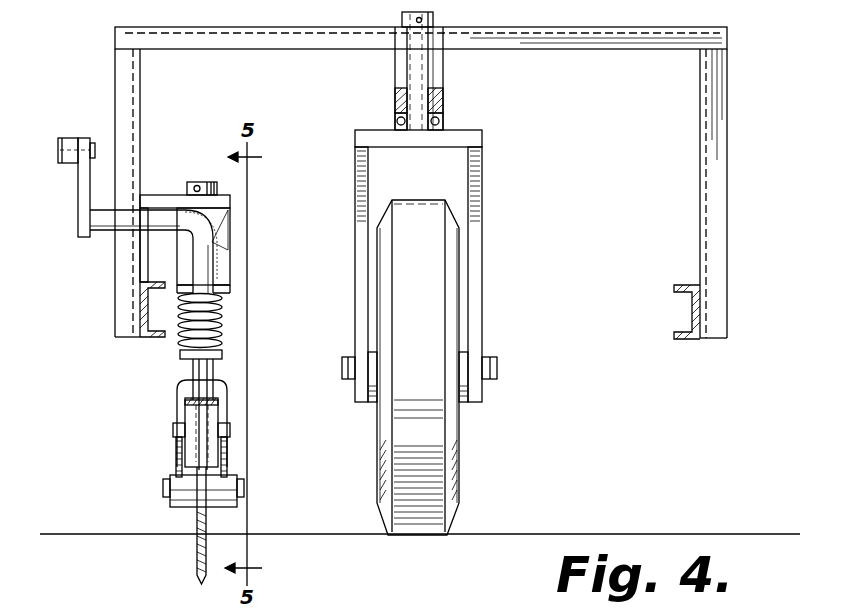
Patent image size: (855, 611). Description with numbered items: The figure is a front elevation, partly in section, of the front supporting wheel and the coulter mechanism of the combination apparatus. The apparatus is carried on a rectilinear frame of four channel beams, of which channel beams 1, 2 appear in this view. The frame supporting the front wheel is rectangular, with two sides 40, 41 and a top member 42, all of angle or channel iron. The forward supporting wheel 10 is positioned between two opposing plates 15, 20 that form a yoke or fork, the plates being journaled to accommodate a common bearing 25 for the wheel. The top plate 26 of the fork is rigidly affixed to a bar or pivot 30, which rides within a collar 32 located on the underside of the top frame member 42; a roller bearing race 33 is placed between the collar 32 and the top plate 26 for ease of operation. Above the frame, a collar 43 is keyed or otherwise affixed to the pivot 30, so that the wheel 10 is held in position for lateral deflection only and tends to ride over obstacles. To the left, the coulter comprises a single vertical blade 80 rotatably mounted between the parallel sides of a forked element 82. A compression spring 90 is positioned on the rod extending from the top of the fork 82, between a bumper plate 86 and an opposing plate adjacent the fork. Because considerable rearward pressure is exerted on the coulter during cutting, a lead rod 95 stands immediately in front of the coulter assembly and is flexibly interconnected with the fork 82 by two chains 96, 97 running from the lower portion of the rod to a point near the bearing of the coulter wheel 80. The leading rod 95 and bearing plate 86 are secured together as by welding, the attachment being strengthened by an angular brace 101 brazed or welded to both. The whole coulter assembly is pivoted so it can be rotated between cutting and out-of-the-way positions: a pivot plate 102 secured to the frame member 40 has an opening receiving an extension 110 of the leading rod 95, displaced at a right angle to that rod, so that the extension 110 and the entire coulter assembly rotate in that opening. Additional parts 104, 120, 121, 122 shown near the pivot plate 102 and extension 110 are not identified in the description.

The channel beam 1 is at (692, 308).
The channel beam 2 is at (140, 312).
The forward supporting wheel 10 is at (444, 438).
The plate 15 is at (355, 190).
The plate 20 is at (482, 206).
The bearing 25 is at (465, 368).
The top plate 26 is at (372, 131).
The pivot 30 is at (407, 100).
The collar 32 is at (443, 92).
The roller bearing race 33 is at (443, 120).
The side 40 is at (115, 74).
The side 41 is at (727, 126).
The top member 42 is at (554, 50).
The collar 43 is at (435, 20).
The vertical blade 80 is at (197, 545).
The forked element 82 is at (180, 386).
The bumper plate 86 is at (218, 192).
The compression spring 90 is at (222, 322).
The lead rod 95 is at (190, 350).
The chain 96 is at (228, 455).
The chain 97 is at (176, 452).
The angular brace 101 is at (228, 263).
The pivot plate 102 is at (143, 262).
The support plate 104 is at (150, 194).
The extension 110 is at (108, 232).
The bracket 120 is at (78, 205).
The nut 121 is at (94, 143).
The bolt 122 is at (70, 138).